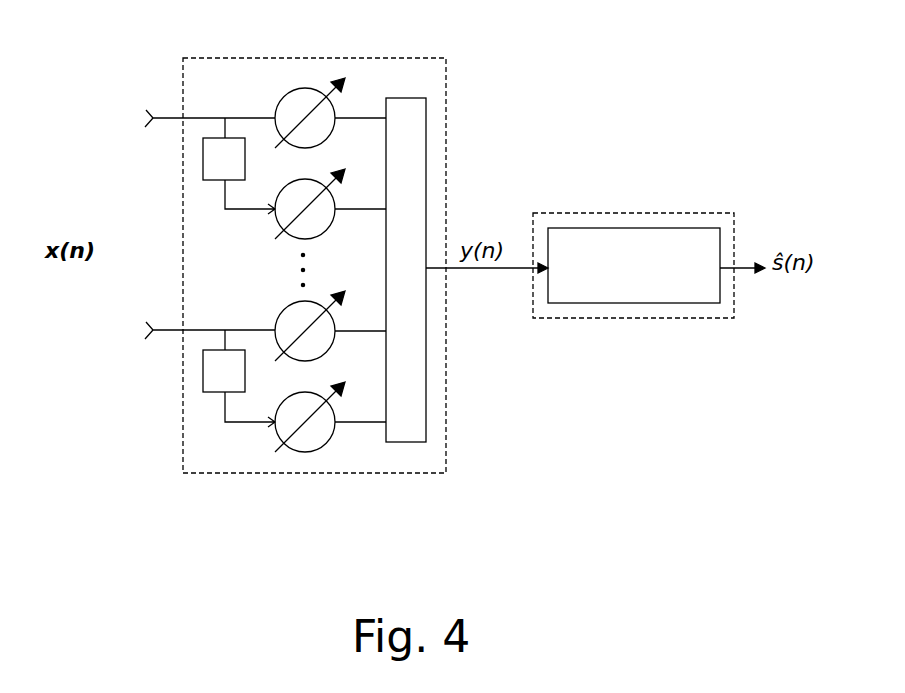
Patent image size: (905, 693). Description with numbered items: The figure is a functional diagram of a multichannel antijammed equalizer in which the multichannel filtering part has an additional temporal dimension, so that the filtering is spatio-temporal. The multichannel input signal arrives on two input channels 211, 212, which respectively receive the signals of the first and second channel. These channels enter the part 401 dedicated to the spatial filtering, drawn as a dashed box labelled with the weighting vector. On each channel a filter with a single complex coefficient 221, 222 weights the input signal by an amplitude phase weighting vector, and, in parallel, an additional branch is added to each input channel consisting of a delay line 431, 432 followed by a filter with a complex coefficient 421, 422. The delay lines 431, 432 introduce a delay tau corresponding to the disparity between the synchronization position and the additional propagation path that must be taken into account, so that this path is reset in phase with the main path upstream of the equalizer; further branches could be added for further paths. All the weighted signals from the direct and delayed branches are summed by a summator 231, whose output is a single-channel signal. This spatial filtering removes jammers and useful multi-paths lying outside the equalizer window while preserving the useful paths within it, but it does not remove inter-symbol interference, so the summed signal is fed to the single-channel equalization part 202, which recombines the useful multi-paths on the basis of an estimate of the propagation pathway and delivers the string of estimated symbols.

The single-channel equalization part 202 is at (627, 320).
The first input channel 211 is at (147, 110).
The second input channel 212 is at (148, 343).
The filter with a single complex coefficient 221 is at (303, 87).
The filter with a single complex coefficient 222 is at (273, 310).
The summator 231 is at (405, 98).
The spatial filtering part 401 is at (208, 473).
The filter with a complex coefficient 421 is at (273, 228).
The filter with a complex coefficient 422 is at (303, 452).
The delay line 431 is at (203, 160).
The delay line 432 is at (200, 373).